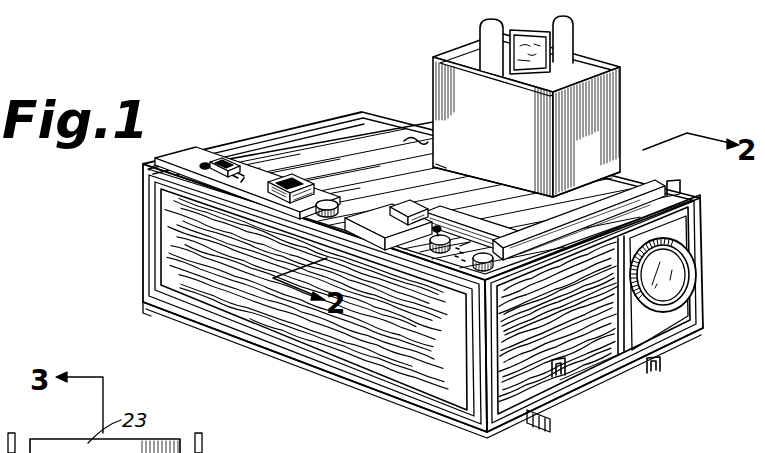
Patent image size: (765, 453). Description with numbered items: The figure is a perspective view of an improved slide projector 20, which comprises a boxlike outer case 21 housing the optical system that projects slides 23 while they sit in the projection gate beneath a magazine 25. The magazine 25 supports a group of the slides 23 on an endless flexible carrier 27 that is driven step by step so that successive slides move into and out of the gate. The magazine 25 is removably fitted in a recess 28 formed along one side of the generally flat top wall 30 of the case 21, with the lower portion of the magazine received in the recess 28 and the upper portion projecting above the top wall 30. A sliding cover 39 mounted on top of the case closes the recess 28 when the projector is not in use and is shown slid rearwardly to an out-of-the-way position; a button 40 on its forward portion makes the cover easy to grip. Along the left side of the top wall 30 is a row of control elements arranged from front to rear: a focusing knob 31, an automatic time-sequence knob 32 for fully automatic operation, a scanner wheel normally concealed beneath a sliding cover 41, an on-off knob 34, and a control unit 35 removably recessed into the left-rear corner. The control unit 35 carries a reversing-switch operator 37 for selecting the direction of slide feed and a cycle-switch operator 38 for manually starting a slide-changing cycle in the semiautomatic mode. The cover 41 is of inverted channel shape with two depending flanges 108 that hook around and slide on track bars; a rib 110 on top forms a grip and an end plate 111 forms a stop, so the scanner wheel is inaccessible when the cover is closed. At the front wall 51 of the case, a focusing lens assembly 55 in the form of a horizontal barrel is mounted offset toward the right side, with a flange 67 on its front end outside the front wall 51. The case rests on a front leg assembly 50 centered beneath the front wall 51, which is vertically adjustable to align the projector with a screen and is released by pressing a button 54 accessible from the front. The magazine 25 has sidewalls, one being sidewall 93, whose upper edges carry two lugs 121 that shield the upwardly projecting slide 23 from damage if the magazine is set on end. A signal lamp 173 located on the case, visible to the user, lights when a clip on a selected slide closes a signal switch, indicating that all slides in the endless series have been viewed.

The slide projector 20 is at (428, 433).
The outer case 21 is at (192, 318).
The slides 23 is at (557, 53).
The magazine 25 is at (600, 120).
The endless flexible carrier 27 is at (575, 79).
The magazine recess 28 is at (625, 167).
The top wall 30 is at (298, 140).
The focusing knob 31 is at (540, 213).
The automatic time-sequence knob 32 is at (553, 172).
The on-off knob 34 is at (440, 165).
The control unit 35 is at (220, 172).
The reversing-switch operator 37 is at (228, 165).
The cycle-switch operator 38 is at (283, 183).
The sliding cover 39 is at (365, 125).
The button 40 is at (402, 138).
The sliding cover 41 is at (450, 208).
The front leg assembly 50 is at (641, 380).
The front wall 51 is at (603, 349).
The button 54 is at (557, 368).
The focusing lens assembly 55 is at (672, 281).
The flange 67 is at (683, 248).
The sidewall 93 is at (482, 111).
The depending flanges 108 is at (415, 228).
The rib 110 is at (415, 208).
The end plate 111 is at (373, 233).
The lugs 121 is at (482, 40).
The signal lamp 173 is at (440, 232).